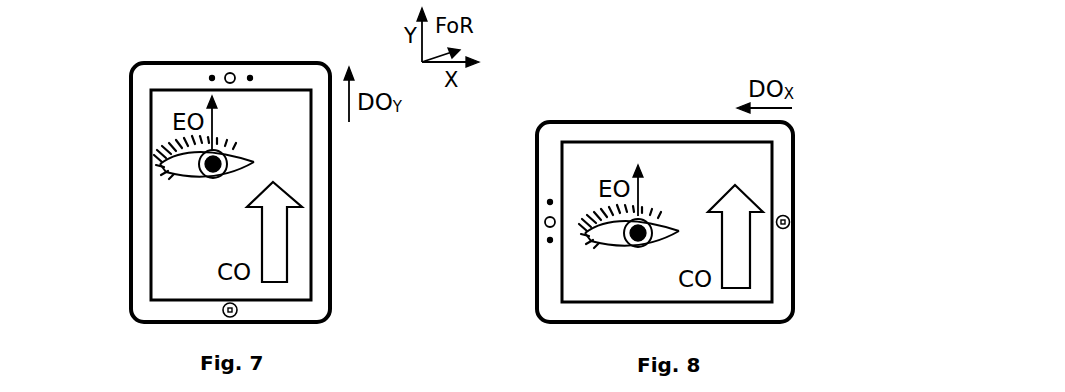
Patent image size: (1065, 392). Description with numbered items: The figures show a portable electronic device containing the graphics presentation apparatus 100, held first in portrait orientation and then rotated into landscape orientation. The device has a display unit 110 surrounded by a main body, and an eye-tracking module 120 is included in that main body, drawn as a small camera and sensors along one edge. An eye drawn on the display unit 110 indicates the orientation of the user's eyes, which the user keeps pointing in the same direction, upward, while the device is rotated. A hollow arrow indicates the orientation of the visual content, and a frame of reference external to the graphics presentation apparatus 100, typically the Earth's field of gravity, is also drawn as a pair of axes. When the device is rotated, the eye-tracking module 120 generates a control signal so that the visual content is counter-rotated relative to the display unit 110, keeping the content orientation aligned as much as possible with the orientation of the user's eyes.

In FIG. 7, the graphics presentation apparatus 100 is at (130, 115).
In FIG. 8, the graphics presentation apparatus 100 is at (622, 120).
In FIG. 7, the display unit 110 is at (258, 113).
In FIG. 8, the display unit 110 is at (717, 158).
In FIG. 7, the eye-tracking module 120 is at (218, 72).
In FIG. 8, the eye-tracking module 120 is at (543, 213).